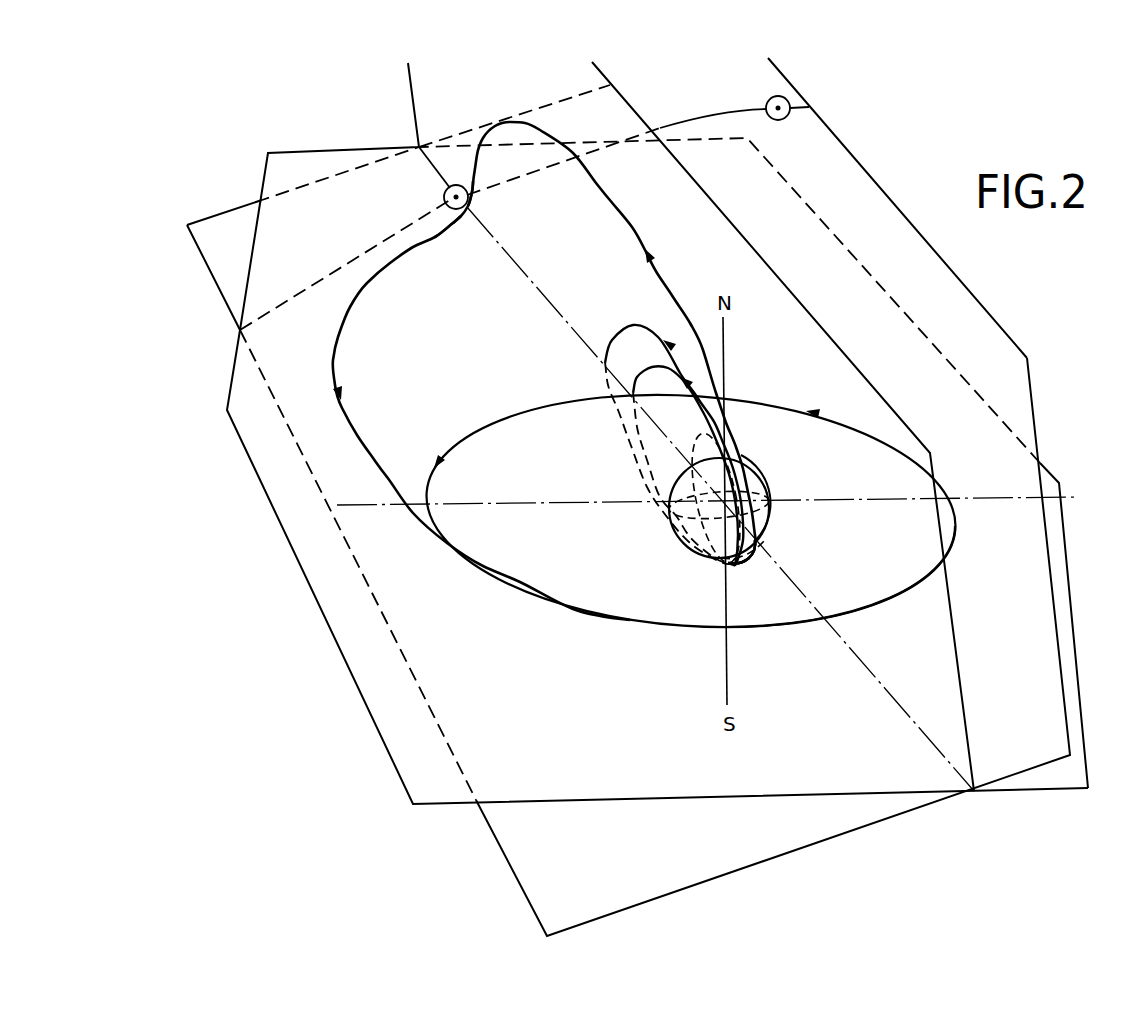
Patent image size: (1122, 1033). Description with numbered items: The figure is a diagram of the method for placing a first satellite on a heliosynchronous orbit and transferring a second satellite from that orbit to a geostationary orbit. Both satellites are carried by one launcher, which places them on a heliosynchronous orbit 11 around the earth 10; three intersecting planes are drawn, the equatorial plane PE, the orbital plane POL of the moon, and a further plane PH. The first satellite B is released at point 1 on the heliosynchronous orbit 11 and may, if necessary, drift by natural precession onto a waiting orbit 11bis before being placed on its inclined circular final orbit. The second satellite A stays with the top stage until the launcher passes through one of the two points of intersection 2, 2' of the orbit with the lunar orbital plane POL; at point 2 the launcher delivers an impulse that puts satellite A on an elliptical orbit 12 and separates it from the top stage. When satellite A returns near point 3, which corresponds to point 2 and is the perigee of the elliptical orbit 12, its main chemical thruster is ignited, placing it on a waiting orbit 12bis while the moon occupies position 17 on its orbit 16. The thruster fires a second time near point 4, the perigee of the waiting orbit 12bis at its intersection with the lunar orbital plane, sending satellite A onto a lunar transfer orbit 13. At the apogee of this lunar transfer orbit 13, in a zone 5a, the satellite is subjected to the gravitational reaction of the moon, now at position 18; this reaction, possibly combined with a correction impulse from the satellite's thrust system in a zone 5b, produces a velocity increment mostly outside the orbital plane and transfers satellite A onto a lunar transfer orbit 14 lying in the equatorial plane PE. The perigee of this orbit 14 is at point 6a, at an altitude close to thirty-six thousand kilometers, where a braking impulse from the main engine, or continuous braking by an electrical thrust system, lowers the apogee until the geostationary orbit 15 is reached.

The release point 1 is at (740, 562).
The point of intersection 2 is at (789, 545).
The perigee point 3 is at (757, 537).
The perigee point of the waiting orbit 4 is at (757, 537).
The point of intersection 2' is at (710, 488).
The zone 5a is at (470, 209).
The zone 5b is at (457, 226).
The perigee point 6a is at (830, 620).
The earth 10 is at (760, 458).
The heliosynchronous orbit 11 is at (762, 568).
The waiting orbit 11bis is at (675, 490).
The elliptical orbit 12 is at (633, 368).
The waiting orbit 12bis is at (608, 330).
The lunar transfer orbit 13 is at (628, 220).
The lunar transfer orbit 14 is at (352, 430).
The geostationary orbit 15 is at (487, 424).
The orbit of the moon 16 is at (722, 114).
The position of the moon 17 is at (768, 99).
The position of the moon 18 is at (445, 192).
The equatorial plane PE is at (363, 703).
The heliosynchronous orbital plane PH is at (958, 640).
The orbital plane of the moon POL is at (506, 864).